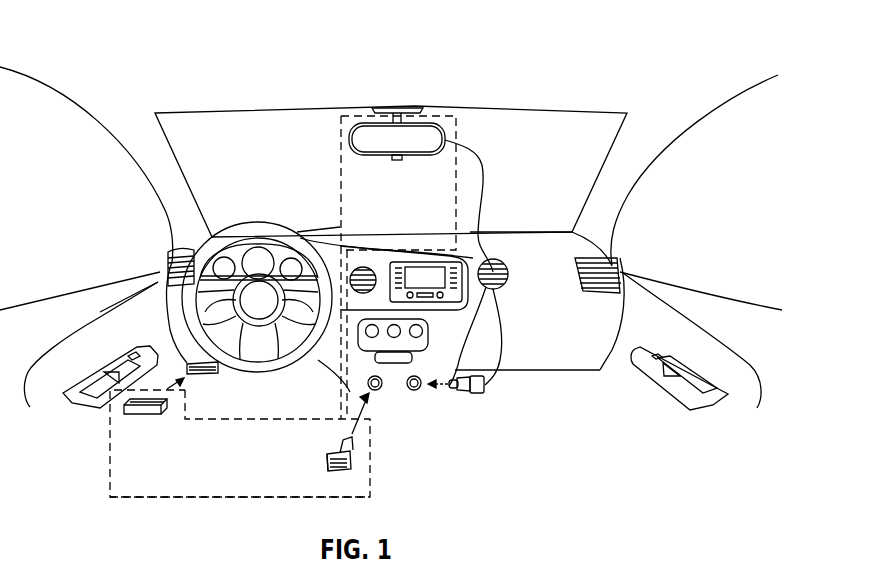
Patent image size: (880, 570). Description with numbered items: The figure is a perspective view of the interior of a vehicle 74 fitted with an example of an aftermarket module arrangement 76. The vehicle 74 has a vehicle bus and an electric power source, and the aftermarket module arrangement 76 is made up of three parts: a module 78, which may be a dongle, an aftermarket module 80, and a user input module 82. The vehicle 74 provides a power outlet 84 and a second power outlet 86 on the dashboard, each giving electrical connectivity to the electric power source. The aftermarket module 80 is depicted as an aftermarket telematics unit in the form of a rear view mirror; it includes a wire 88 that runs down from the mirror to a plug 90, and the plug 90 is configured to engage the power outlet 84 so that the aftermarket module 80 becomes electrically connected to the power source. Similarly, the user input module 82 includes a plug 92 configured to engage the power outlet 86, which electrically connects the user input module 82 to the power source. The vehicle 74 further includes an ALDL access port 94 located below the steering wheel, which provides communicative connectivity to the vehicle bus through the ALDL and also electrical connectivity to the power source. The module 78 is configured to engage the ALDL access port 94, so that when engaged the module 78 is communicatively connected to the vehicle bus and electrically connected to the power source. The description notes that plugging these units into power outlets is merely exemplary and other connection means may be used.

The vehicle 74 is at (176, 38).
The aftermarket module arrangement 76 is at (139, 499).
The module 78 is at (148, 414).
The aftermarket module 80 is at (352, 152).
The user input module 82 is at (327, 459).
The power outlet 84 is at (416, 392).
The power outlet 86 is at (368, 386).
The wire 88 is at (487, 166).
The plug 90 is at (480, 392).
The plug 92 is at (353, 451).
The ALDL access port 94 is at (212, 375).